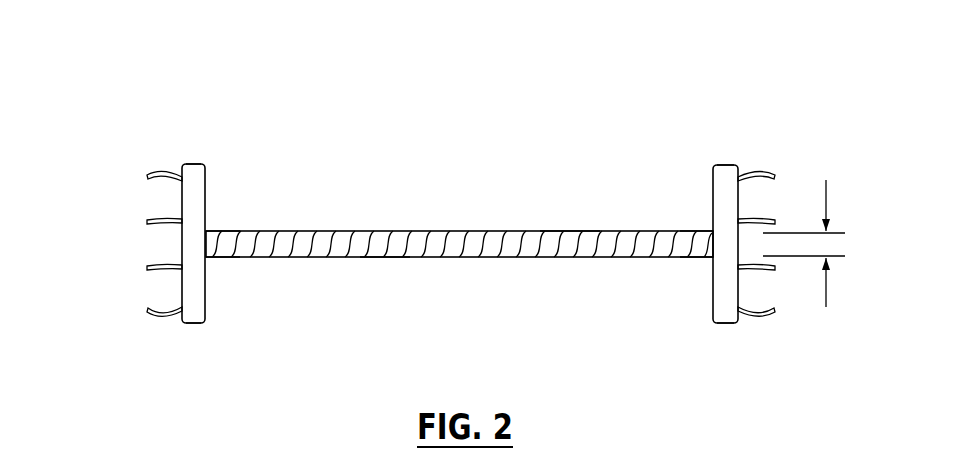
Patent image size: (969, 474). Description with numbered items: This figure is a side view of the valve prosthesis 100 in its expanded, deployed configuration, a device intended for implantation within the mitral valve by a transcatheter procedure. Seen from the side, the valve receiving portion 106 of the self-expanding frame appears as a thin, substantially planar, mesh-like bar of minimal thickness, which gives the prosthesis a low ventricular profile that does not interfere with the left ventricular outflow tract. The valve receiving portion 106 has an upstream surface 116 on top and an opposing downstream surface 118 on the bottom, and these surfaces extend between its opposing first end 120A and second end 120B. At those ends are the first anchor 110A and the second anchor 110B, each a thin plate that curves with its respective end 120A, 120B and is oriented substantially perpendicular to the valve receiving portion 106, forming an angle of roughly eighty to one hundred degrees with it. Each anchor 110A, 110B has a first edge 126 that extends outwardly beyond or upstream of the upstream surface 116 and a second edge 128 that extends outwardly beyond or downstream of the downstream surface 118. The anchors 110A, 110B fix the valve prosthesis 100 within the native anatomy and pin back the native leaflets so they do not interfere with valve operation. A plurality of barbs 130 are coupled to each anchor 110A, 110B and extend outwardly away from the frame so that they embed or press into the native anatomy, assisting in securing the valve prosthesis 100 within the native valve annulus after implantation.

The valve prosthesis 100 is at (150, 108).
The valve receiving portion 106 is at (567, 228).
The first anchor 110A is at (190, 249).
The second anchor 110B is at (727, 285).
The upstream surface 116 is at (388, 231).
The downstream surface 118 is at (383, 257).
The first end 120A is at (253, 228).
The second end 120B is at (692, 227).
The first edge 126 is at (193, 164).
The second edge 128 is at (194, 323).
The barbs 130 is at (151, 162).